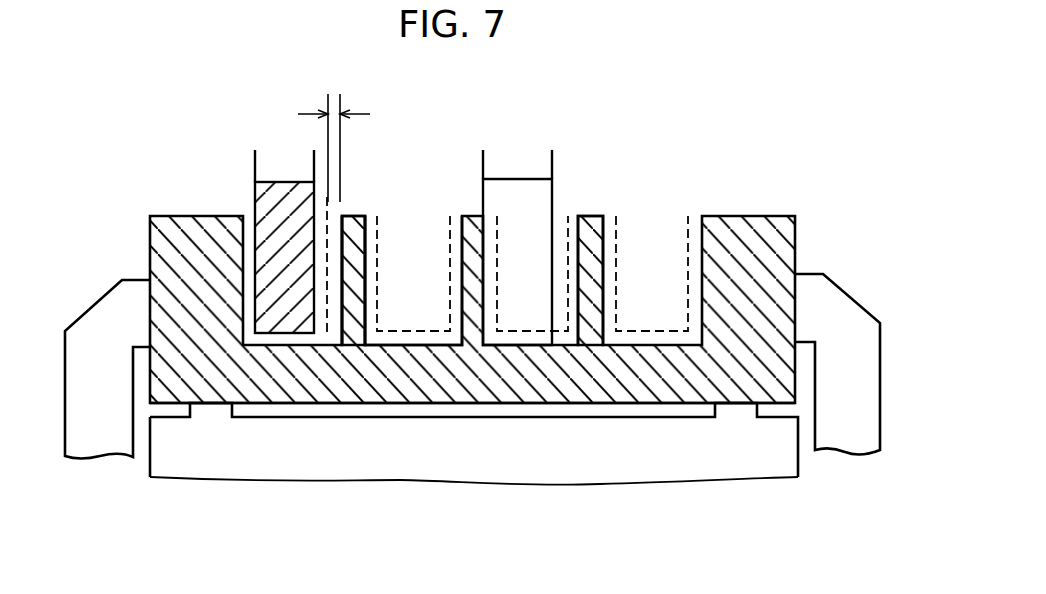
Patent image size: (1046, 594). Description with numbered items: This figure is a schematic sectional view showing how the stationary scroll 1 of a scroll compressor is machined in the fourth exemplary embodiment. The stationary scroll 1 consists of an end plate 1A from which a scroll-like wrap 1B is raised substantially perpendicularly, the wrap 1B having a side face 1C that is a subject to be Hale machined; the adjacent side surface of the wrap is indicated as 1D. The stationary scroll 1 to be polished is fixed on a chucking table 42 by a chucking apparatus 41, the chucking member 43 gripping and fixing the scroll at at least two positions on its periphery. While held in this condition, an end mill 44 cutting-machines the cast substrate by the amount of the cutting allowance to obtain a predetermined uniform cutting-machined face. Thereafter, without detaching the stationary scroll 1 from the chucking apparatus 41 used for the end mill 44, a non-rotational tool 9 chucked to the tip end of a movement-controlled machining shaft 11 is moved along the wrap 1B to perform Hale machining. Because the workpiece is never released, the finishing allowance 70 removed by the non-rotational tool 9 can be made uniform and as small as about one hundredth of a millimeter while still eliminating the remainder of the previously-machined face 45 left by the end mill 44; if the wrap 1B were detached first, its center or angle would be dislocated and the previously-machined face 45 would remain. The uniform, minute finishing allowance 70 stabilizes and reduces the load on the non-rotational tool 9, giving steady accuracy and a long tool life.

The stationary scroll 1 is at (312, 404).
The end plate 1A is at (530, 395).
The wrap 1B is at (352, 218).
The side face 1C is at (377, 242).
The side wall of trench 1D is at (340, 307).
The non-rotational tool 9 is at (537, 206).
The machining shaft 11 is at (524, 160).
The chucking apparatus 41 is at (140, 478).
The chucking table 42 is at (440, 463).
The chucking member 43 is at (95, 362).
The end mill 44 is at (267, 197).
The previously-machined face 45 is at (327, 197).
The finishing allowance 70 is at (334, 136).